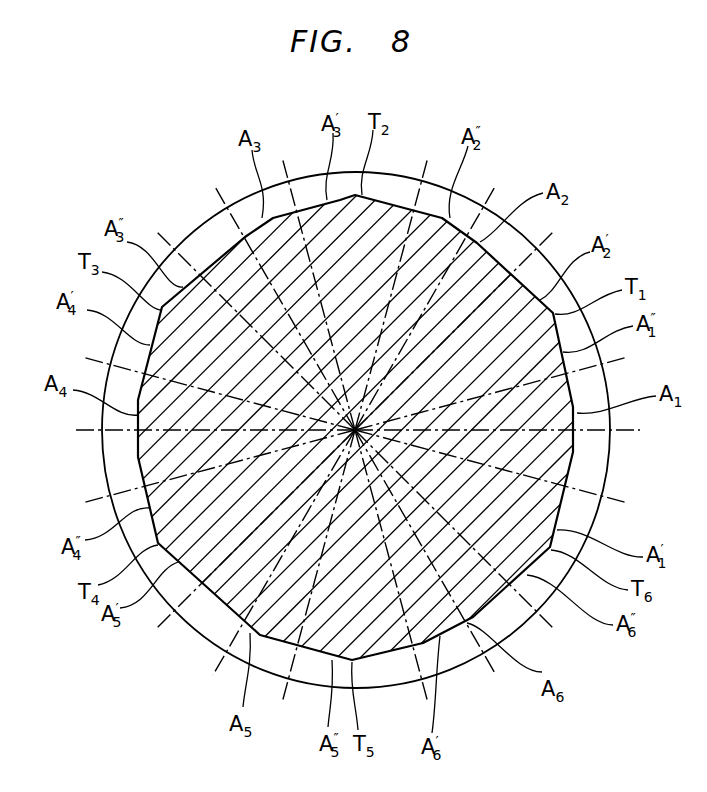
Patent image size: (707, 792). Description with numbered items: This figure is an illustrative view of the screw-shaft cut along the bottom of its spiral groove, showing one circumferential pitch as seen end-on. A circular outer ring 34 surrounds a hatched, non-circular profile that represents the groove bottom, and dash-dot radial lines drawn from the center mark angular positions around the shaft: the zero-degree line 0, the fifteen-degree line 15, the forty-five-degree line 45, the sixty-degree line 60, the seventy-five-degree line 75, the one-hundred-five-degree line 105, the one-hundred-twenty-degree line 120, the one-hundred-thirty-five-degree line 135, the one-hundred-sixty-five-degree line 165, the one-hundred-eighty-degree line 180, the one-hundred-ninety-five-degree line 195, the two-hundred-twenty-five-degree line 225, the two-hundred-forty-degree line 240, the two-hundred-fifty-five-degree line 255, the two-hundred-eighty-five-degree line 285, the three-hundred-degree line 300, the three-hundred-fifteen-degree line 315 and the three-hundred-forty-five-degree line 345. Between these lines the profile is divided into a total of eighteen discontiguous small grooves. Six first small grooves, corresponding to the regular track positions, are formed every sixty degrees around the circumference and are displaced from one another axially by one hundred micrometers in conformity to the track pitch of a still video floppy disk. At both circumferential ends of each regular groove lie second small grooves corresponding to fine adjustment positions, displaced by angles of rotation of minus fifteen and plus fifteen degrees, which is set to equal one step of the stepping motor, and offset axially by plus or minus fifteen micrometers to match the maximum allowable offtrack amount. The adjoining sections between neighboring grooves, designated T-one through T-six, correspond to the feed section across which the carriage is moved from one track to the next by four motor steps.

The outer ring 34 is at (206, 640).
The 0 degree radial line 0 is at (507, 430).
The 15 degree radial line 15 is at (505, 387).
The 45 degree radial line 45 is at (471, 324).
The 60 degree radial line 60 is at (440, 295).
The 75 degree radial line 75 is at (401, 277).
The 105 degree radial line 105 is at (315, 277).
The 120 degree radial line 120 is at (278, 291).
The 135 degree radial line 135 is at (244, 312).
The 165 degree radial line 165 is at (199, 383).
The 180 degree radial line 180 is at (190, 430).
The 195 degree radial line 195 is at (199, 474).
The 225 degree radial line 225 is at (239, 545).
The 240 degree radial line 240 is at (276, 566).
The 255 degree radial line 255 is at (310, 581).
The 285 degree radial line 285 is at (405, 582).
The 300 degree radial line 300 is at (438, 569).
The 315 degree radial line 315 is at (474, 545).
The 345 degree radial line 345 is at (514, 476).